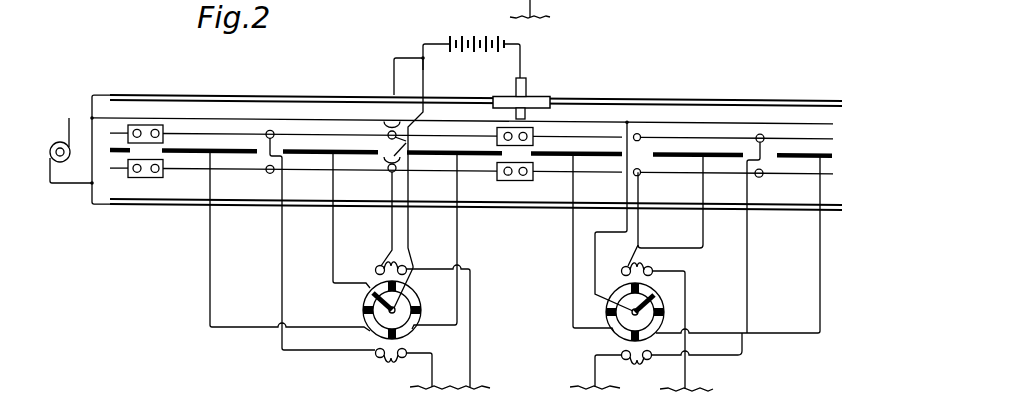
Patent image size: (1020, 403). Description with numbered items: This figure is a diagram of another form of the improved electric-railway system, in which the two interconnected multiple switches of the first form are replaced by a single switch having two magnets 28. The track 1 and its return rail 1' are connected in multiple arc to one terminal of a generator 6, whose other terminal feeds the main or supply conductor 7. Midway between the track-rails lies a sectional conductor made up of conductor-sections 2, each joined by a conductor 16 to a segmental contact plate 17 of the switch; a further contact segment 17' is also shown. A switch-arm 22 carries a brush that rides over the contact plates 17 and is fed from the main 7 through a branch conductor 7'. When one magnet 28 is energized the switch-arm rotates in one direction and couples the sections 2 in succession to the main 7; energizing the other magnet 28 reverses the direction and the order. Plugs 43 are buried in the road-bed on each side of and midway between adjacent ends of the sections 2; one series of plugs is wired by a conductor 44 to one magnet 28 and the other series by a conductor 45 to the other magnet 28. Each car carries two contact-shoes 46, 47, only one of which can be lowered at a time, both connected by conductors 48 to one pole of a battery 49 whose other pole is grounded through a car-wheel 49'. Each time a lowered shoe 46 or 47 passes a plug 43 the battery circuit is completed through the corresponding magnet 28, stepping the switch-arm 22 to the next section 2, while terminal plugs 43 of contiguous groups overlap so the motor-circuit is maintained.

The track 1 is at (476, 92).
The return track rail 1' is at (476, 213).
The conductor-sections 2 is at (312, 151).
The generator 6 is at (71, 150).
The main or supply conductor 7 is at (462, 114).
The branch conductor 7' is at (513, 184).
The conductors 16 is at (820, 291).
The segmental contact plates or blocks 17 is at (499, 322).
The contact segment 17' is at (373, 340).
The switch-arm 22 is at (365, 319).
The magnet 28 is at (662, 263).
The plugs 43 is at (271, 130).
The conductor 44 is at (392, 231).
The conductor 45 is at (282, 274).
The contact-shoe 46 is at (382, 169).
The contact-shoe 47 is at (391, 121).
The conductors 48 is at (409, 75).
The battery 49 is at (471, 57).
The car-wheel 49' is at (527, 95).